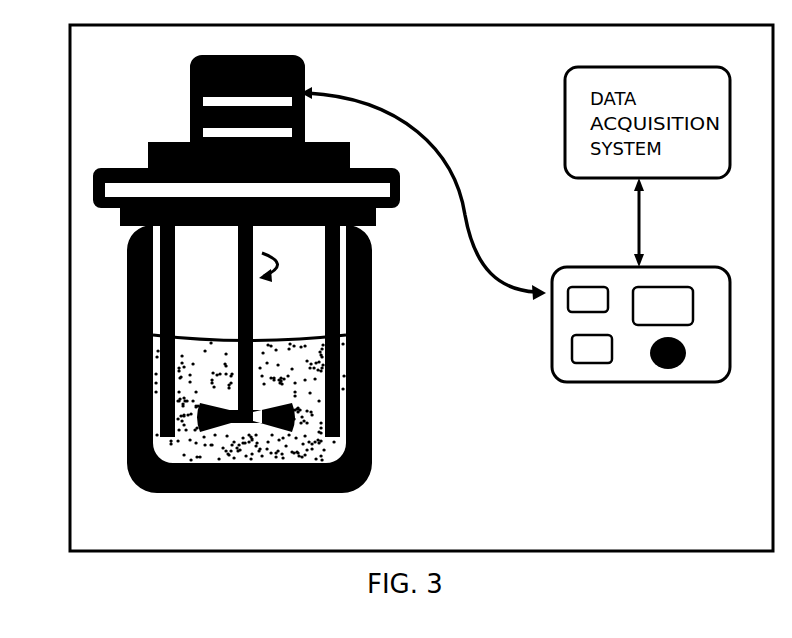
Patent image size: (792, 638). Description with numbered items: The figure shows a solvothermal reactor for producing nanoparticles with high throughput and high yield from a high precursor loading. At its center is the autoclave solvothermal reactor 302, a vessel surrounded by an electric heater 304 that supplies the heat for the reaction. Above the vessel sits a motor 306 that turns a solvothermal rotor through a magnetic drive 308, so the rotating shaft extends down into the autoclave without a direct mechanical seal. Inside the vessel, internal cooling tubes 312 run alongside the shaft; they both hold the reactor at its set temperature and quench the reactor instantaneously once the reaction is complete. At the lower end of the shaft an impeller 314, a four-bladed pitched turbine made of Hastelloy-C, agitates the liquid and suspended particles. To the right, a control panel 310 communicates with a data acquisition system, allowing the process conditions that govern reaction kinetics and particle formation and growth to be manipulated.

The autoclave solvothermal reactor 302 is at (273, 501).
The electric heater 304 is at (127, 290).
The motor 306 is at (301, 58).
The magnetic drive 308 is at (189, 117).
The control panel 310 is at (694, 259).
The cooling tubes 312 is at (343, 305).
The impeller 314 is at (258, 397).